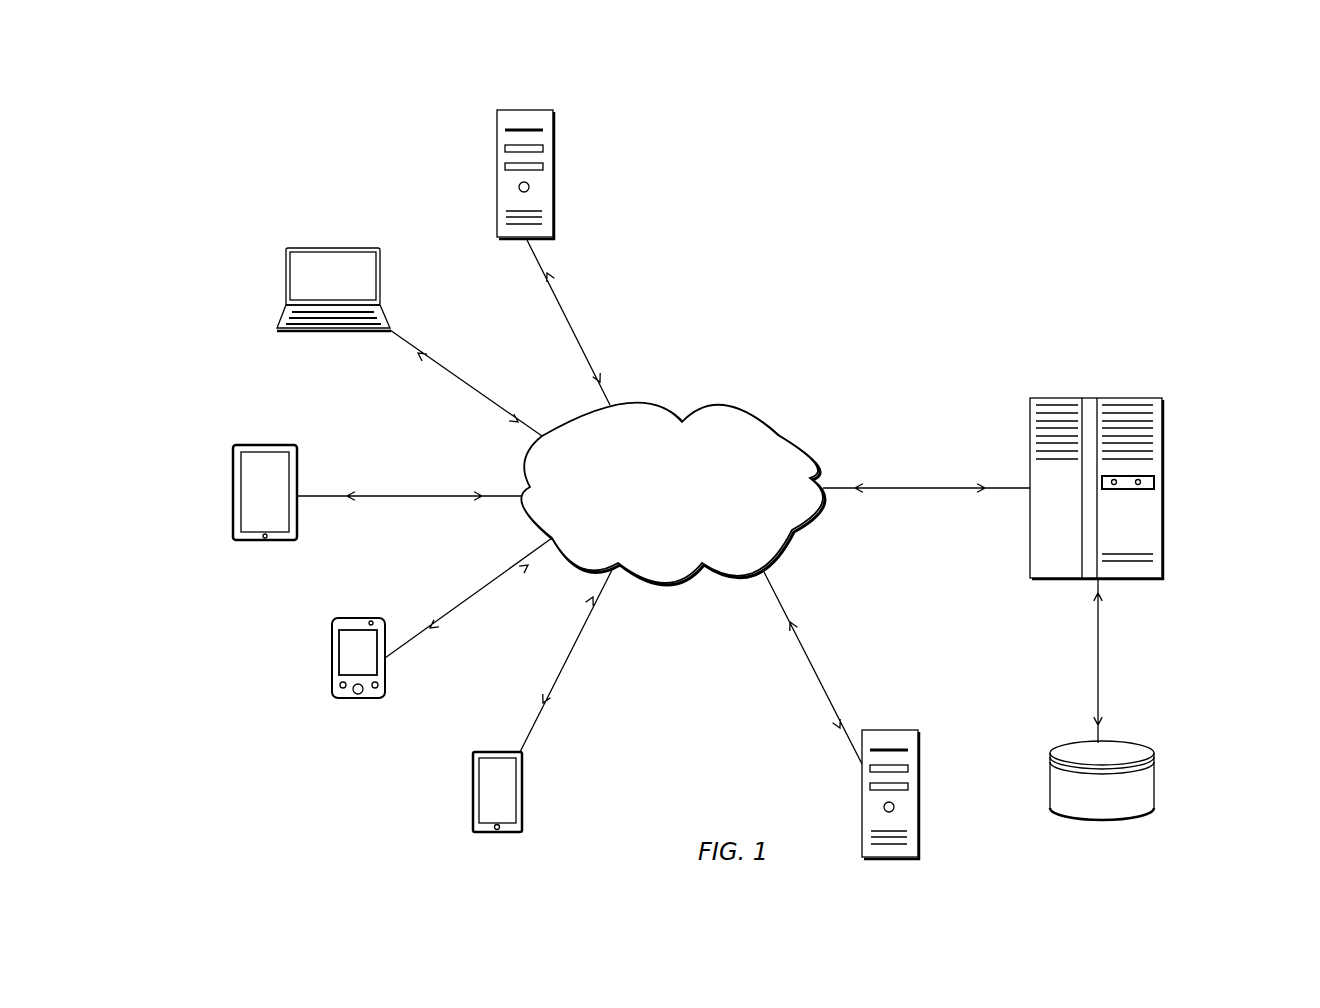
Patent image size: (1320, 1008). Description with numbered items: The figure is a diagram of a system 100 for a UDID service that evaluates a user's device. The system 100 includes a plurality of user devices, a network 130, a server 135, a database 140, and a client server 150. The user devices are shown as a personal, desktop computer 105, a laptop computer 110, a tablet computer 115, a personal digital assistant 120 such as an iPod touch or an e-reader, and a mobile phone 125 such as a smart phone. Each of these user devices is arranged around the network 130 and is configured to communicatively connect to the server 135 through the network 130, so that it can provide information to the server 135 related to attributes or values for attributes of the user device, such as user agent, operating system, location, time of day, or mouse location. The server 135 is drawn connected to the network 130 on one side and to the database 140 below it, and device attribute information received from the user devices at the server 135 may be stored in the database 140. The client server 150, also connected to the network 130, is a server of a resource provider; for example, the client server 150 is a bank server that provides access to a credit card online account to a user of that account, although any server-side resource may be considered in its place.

The system 100 is at (281, 112).
The personal, desktop computer 105 is at (497, 165).
The laptop computer 110 is at (286, 275).
The tablet computer 115 is at (233, 490).
The personal digital assistant 120 is at (332, 650).
The mobile phone 125 is at (473, 790).
The network 130 is at (742, 410).
The server 135 is at (1162, 490).
The database 140 is at (1155, 780).
The client server 150 is at (918, 757).